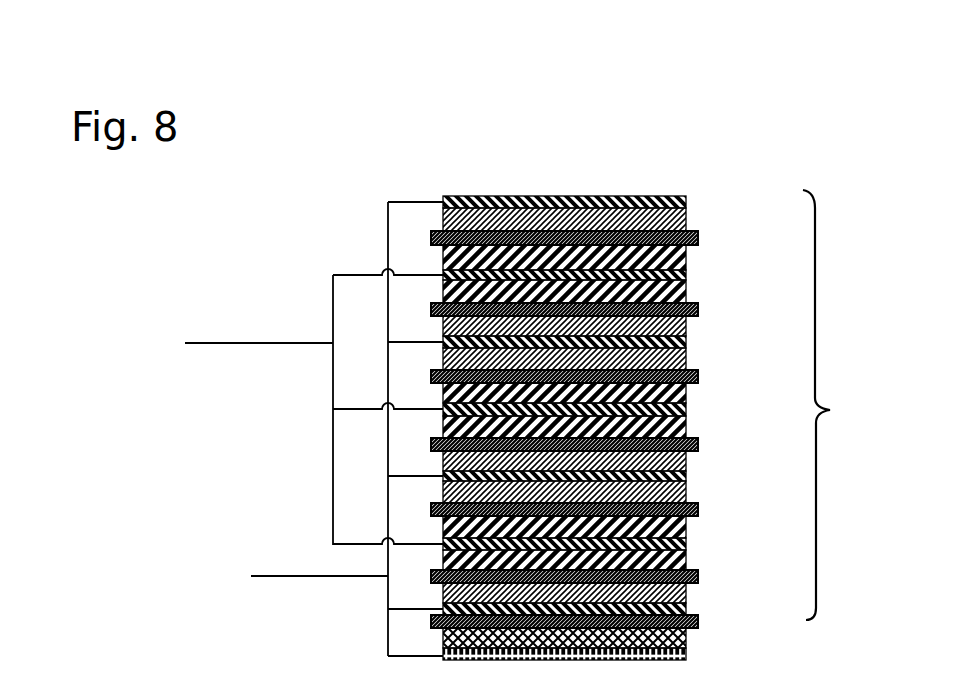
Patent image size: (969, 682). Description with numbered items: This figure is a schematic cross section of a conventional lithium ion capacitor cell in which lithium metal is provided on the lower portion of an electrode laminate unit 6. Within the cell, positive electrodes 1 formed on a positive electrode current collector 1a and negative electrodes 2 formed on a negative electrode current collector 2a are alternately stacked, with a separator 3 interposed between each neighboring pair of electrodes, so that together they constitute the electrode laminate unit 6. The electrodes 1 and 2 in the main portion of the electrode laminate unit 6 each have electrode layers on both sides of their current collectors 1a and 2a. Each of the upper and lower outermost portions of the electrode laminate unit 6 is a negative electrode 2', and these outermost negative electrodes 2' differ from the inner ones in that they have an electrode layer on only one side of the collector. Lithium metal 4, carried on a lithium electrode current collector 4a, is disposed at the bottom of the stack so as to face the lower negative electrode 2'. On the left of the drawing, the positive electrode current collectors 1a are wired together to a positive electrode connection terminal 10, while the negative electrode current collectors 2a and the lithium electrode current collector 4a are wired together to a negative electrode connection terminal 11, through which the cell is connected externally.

The positive electrode 1 is at (680, 250).
The positive electrode current collector 1a is at (680, 267).
The negative electrode 2 is at (602, 410).
The negative electrode 2' is at (607, 405).
The negative electrode current collector 2a is at (680, 197).
The separator 3 is at (690, 232).
The lithium metal 4 is at (680, 630).
The lithium electrode current collector 4a is at (680, 646).
The electrode laminate unit 6 is at (643, 410).
The positive electrode connection terminal 10 is at (249, 335).
The negative electrode connection terminal 11 is at (298, 575).